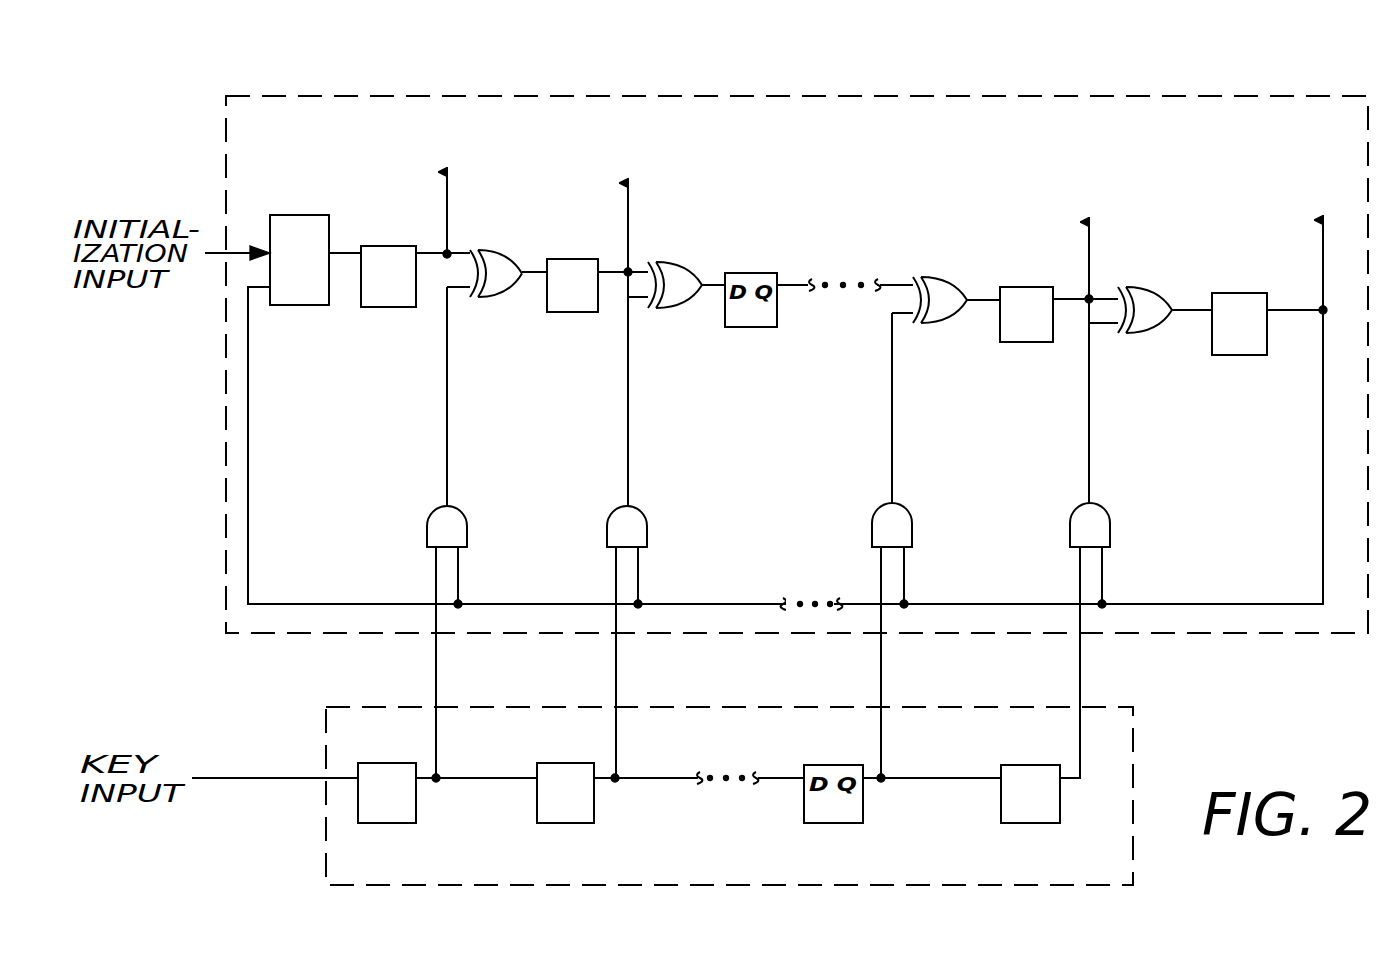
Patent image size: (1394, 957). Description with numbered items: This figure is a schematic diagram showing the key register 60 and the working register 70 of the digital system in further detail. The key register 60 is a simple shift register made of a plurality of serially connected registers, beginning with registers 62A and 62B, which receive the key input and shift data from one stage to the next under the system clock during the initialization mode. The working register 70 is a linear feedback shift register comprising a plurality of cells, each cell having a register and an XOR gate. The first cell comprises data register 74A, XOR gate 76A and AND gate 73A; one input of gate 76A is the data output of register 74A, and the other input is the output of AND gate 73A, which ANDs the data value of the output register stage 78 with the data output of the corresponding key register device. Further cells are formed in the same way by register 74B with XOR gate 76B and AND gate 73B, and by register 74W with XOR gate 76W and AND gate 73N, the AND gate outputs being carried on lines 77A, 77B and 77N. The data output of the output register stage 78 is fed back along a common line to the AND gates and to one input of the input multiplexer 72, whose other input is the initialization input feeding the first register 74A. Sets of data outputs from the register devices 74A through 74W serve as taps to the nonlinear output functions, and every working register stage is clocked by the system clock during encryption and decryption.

The key register 60 is at (326, 709).
The register 62A is at (384, 824).
The register 62B is at (566, 824).
The working register 70 is at (271, 96).
The input multiplexer 72 is at (301, 215).
The AND gate 73A is at (427, 519).
The AND gate 73B is at (607, 514).
The AND gate 73N is at (1070, 514).
The data register 74A is at (385, 246).
The data register 74B is at (597, 247).
The data register 74W is at (1024, 286).
The XOR gate 76A is at (493, 257).
The XOR gate 76B is at (685, 273).
The XOR gate 76W is at (1160, 272).
The feedback line 77A is at (449, 408).
The feedback line 77B is at (630, 416).
The feedback line 77N is at (1091, 433).
The output register stage 78 is at (1237, 356).